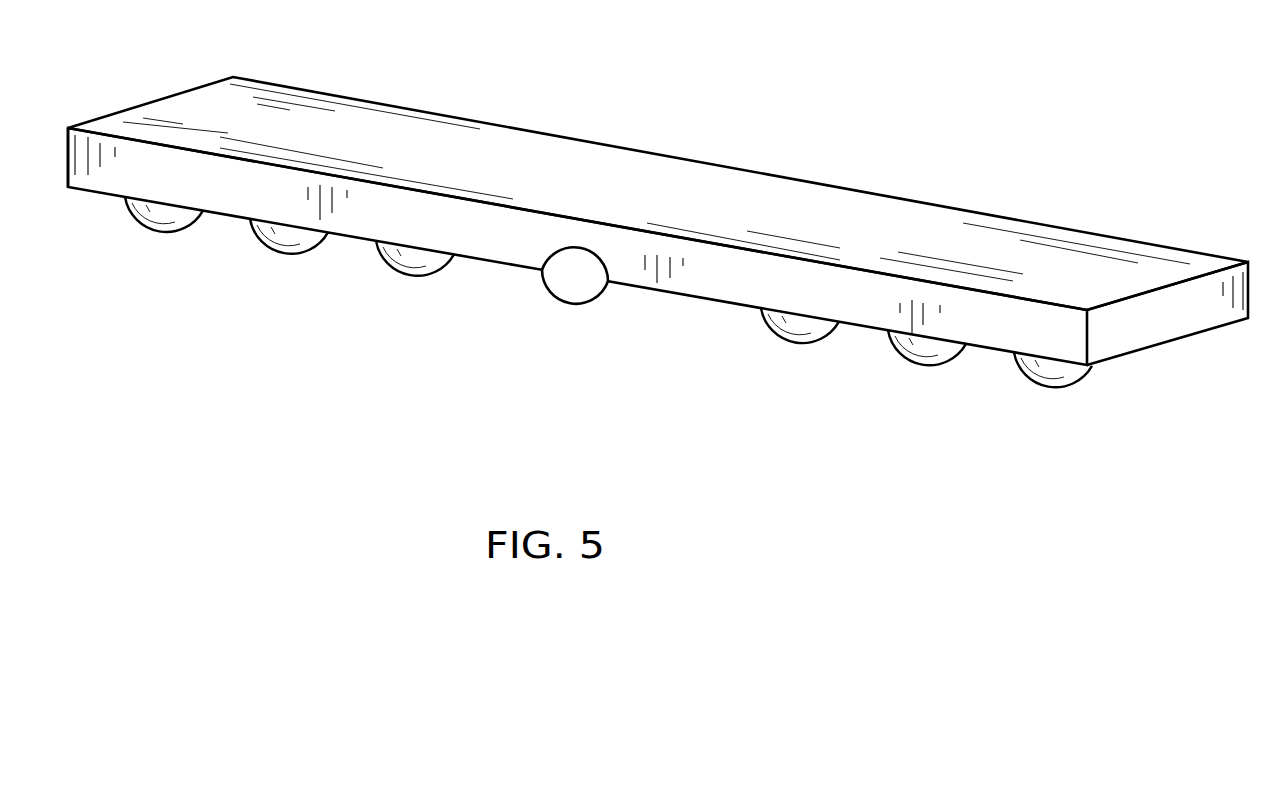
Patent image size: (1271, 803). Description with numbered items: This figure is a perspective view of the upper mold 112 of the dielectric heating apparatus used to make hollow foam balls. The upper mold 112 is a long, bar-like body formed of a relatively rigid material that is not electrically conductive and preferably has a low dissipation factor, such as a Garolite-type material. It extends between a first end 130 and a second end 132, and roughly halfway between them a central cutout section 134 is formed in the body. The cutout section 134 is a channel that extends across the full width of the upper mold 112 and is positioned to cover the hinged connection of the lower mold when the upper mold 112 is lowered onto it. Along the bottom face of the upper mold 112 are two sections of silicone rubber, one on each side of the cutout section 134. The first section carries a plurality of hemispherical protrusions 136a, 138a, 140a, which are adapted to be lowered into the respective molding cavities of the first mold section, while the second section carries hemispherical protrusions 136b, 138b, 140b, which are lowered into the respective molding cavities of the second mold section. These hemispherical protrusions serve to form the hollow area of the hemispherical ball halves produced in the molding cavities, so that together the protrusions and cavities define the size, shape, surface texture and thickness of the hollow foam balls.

The upper mold 112 is at (922, 158).
The first end 130 is at (1177, 327).
The second end 132 is at (100, 192).
The central cutout section 134 is at (595, 265).
The hemispherical protrusion 136a is at (1030, 385).
The hemispherical protrusion 136b is at (168, 232).
The hemispherical protrusion 138a is at (900, 358).
The hemispherical protrusion 138b is at (295, 253).
The hemispherical protrusion 140a is at (772, 333).
The hemispherical protrusion 140b is at (422, 277).